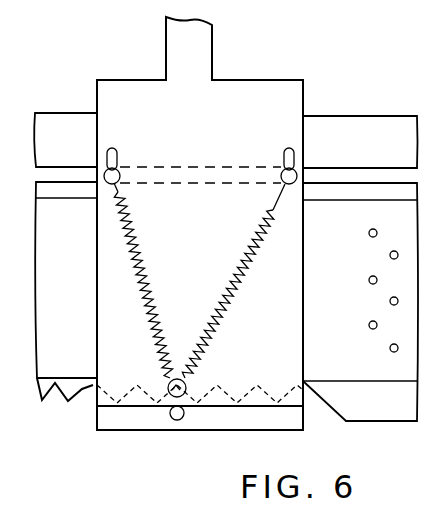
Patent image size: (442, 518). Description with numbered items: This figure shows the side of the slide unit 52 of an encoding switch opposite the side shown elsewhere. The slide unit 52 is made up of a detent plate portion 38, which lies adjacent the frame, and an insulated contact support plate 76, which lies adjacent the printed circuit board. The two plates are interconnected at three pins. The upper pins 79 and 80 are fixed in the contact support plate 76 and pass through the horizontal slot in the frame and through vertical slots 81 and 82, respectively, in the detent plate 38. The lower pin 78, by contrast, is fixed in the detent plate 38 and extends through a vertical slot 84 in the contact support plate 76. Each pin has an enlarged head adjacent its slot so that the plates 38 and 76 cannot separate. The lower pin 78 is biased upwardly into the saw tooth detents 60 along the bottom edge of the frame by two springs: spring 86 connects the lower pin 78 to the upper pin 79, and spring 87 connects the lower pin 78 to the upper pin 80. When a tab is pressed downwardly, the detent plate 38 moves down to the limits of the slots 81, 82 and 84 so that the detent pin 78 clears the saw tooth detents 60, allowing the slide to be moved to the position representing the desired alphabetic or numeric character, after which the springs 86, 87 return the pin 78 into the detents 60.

The slide unit 52 is at (233, 72).
The vertical slot 82 is at (113, 149).
The upper pin 80 is at (115, 174).
The vertical slot 81 is at (292, 156).
The upper pin 79 is at (284, 173).
The detent plate portion 38 is at (206, 224).
The spring 87 is at (146, 259).
The spring 86 is at (242, 297).
The lower pin 78 is at (186, 382).
The saw tooth detents 60 is at (58, 396).
The vertical slot 84 is at (175, 421).
The insulated contact support plate 76 is at (273, 421).